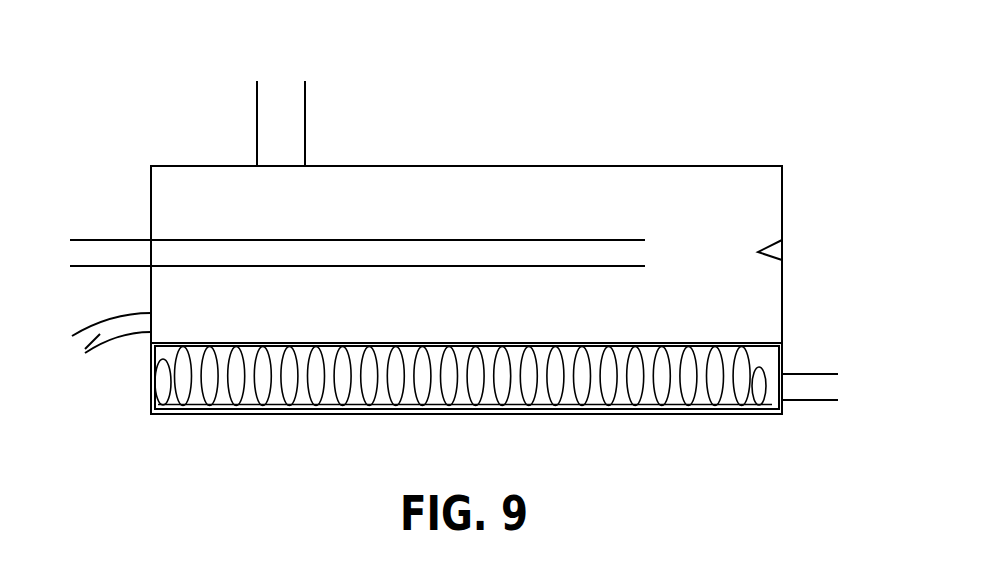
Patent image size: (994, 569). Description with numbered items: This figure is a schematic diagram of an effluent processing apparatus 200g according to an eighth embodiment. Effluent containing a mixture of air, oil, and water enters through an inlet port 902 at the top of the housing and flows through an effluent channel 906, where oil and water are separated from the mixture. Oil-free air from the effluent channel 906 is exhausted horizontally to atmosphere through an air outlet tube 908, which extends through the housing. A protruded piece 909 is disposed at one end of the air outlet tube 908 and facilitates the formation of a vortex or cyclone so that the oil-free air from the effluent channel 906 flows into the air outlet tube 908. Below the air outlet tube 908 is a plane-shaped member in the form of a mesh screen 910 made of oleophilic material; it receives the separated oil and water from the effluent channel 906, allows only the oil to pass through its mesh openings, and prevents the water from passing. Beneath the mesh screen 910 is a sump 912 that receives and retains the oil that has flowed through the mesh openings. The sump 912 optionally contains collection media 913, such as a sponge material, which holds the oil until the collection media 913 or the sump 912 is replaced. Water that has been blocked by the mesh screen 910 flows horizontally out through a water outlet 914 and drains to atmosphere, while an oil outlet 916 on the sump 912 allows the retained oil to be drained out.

The effluent processing apparatus 200g is at (694, 134).
The inlet port 902 is at (281, 81).
The effluent channel 906 is at (471, 215).
The air outlet tube 908 is at (115, 253).
The protruded piece 909 is at (761, 250).
The mesh screen 910 is at (722, 342).
The sump 912 is at (340, 414).
The collection media 913 is at (555, 383).
The water outlet 914 is at (80, 337).
The oil outlet 916 is at (813, 387).